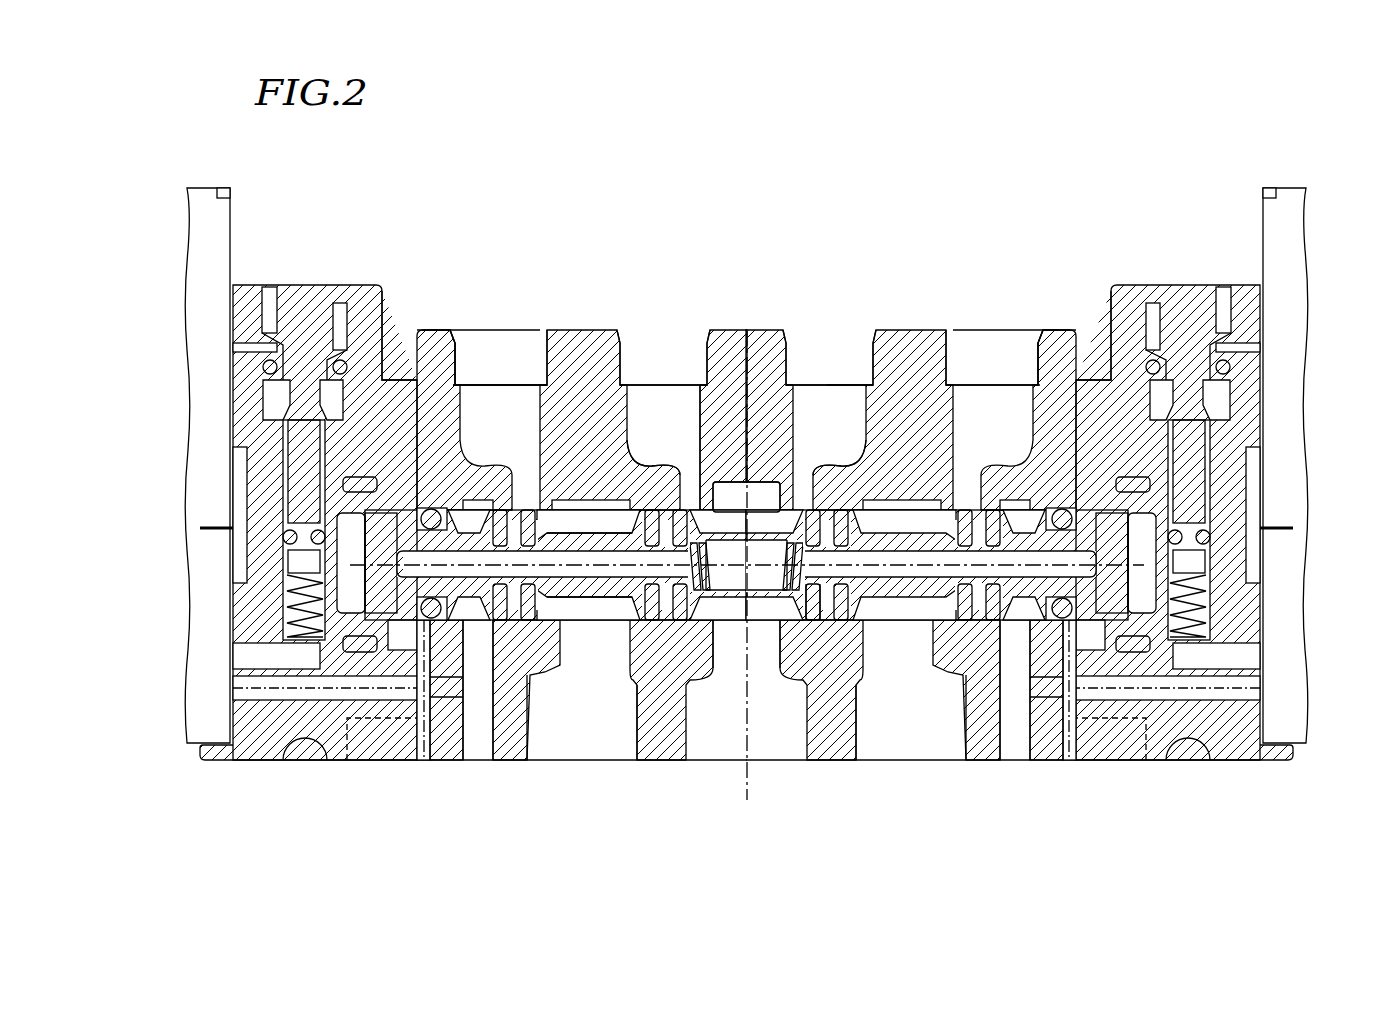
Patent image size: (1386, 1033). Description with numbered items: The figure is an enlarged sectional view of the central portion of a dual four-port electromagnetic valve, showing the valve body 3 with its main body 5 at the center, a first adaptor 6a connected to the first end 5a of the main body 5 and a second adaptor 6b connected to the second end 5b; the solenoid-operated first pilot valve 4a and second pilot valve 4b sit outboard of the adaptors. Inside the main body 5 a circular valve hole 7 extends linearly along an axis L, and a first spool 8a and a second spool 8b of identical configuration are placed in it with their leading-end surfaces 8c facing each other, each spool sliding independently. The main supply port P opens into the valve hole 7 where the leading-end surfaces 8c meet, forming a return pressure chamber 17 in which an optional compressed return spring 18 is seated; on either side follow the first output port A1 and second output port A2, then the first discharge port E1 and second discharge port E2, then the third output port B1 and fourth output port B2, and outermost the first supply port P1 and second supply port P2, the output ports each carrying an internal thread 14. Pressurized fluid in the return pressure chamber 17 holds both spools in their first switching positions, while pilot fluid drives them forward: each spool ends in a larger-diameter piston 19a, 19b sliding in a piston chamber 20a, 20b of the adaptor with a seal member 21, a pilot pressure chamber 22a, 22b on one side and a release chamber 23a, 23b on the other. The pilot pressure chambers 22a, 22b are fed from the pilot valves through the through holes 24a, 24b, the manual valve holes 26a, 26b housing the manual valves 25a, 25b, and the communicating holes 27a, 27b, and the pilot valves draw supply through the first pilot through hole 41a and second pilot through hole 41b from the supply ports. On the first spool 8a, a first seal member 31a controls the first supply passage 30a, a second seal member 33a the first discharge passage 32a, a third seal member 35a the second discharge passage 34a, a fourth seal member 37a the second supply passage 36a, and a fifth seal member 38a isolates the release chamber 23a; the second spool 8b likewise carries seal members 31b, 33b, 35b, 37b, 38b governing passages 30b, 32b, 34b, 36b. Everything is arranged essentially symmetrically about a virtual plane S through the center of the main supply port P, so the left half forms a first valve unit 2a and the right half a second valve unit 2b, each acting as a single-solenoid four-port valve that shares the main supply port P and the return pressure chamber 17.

The first valve unit 2a is at (540, 226).
The second valve unit 2b is at (861, 215).
The valve body 3 is at (909, 302).
The first pilot valve 4a is at (206, 207).
The second pilot valve 4b is at (1290, 205).
The main body 5 is at (753, 520).
The first end 5a is at (413, 360).
The second end 5b is at (1082, 360).
The first adaptor 6a is at (362, 300).
The second adaptor 6b is at (1128, 300).
The valve hole 7 is at (573, 520).
The first spool 8a is at (585, 602).
The second spool 8b is at (912, 602).
The leading-end surface 8c is at (718, 545).
The internal thread 14 is at (635, 350).
The return pressure chamber 17 is at (733, 600).
The return spring 18 is at (775, 500).
The piston 19a is at (377, 527).
The piston 19b is at (1168, 557).
The piston chamber 20a is at (322, 485).
The piston chamber 20b is at (1150, 615).
The seal member 21 is at (365, 487).
The pilot pressure chamber 22a is at (350, 585).
The pilot pressure chamber 22b is at (1143, 592).
The release chamber 23a is at (397, 637).
The release chamber 23b is at (1130, 652).
The through hole 24a is at (330, 552).
The through hole 24b is at (1207, 554).
The manual valve 25a is at (300, 300).
The manual valve 25b is at (1194, 300).
The manual valve hole 26a is at (287, 617).
The manual valve hole 26b is at (1210, 607).
The communicating hole 27a is at (270, 657).
The communicating hole 27b is at (1230, 658).
The first supply passage 30a is at (702, 480).
The first supply passage 30b is at (800, 520).
The first seal member 31a is at (665, 520).
The first seal member 31b is at (812, 630).
The first discharge passage 32a is at (617, 612).
The first discharge passage 32b is at (878, 520).
The second seal member 33a is at (672, 625).
The second seal member 33b is at (845, 625).
The second discharge passage 34a is at (547, 460).
The second discharge passage 34b is at (945, 520).
The third seal member 35a is at (528, 520).
The third seal member 35b is at (966, 520).
The second supply passage 36a is at (455, 500).
The second supply passage 36b is at (1038, 500).
The fourth seal member 37a is at (517, 700).
The fourth seal member 37b is at (978, 700).
The fifth seal member 38a is at (427, 740).
The fifth seal member 38b is at (1062, 640).
The first pilot through hole 41a is at (260, 690).
The second pilot through hole 41b is at (1230, 690).
The first output port A1 is at (656, 355).
The second output port A2 is at (818, 355).
The third output port B1 is at (515, 355).
The fourth output port B2 is at (980, 355).
The first discharge port E1 is at (596, 742).
The second discharge port E2 is at (897, 742).
The axis L is at (1140, 567).
The main supply port P is at (768, 600).
The first supply port P1 is at (480, 720).
The second supply port P2 is at (1015, 720).
The virtual plane S is at (747, 330).